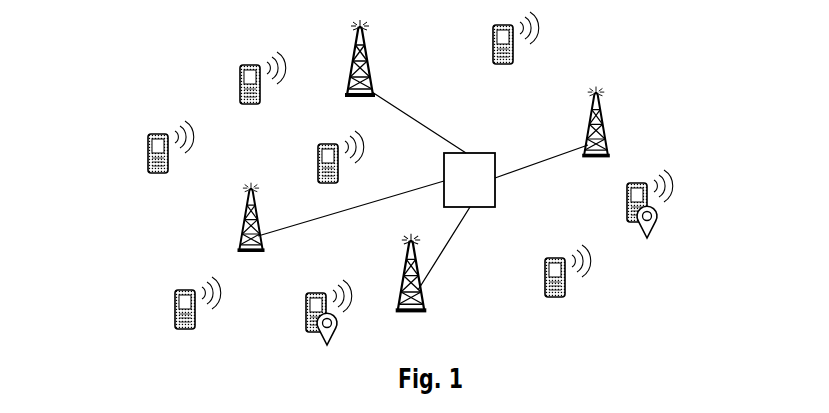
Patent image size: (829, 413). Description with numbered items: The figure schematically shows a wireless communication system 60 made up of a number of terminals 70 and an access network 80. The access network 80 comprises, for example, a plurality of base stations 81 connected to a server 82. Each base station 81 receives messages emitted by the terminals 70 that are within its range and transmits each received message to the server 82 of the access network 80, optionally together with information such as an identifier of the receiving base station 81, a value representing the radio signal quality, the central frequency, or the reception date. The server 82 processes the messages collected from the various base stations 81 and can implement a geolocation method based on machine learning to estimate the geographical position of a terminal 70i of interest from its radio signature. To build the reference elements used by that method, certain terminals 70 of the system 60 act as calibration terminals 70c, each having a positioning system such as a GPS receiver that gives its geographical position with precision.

The wireless communication system 60 is at (128, 35).
The user equipment / mobile device 70 is at (492, 41).
The user equipment with unknown location 70i is at (241, 86).
The user equipment with known location 70c is at (305, 311).
The network 80 is at (488, 131).
The base station 81 is at (374, 87).
The network server / core network node 82 is at (469, 180).